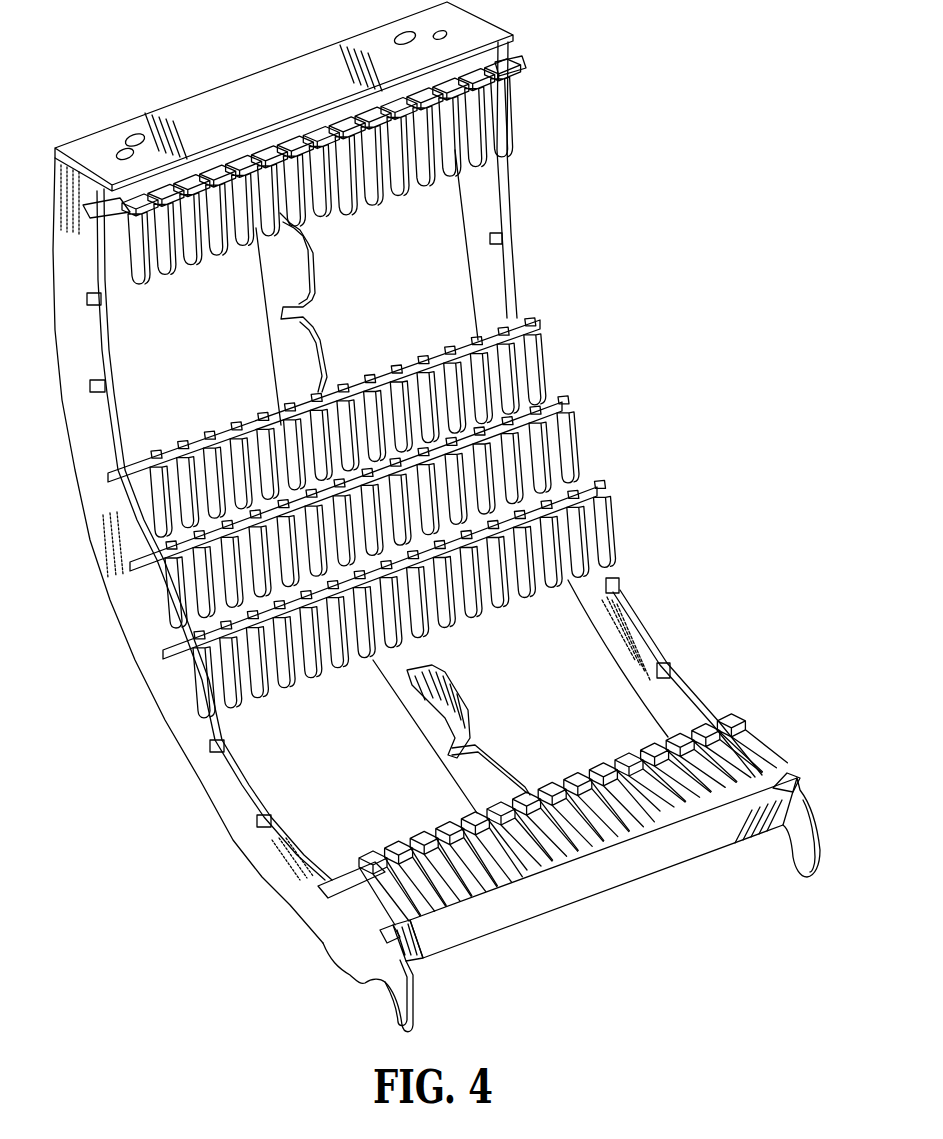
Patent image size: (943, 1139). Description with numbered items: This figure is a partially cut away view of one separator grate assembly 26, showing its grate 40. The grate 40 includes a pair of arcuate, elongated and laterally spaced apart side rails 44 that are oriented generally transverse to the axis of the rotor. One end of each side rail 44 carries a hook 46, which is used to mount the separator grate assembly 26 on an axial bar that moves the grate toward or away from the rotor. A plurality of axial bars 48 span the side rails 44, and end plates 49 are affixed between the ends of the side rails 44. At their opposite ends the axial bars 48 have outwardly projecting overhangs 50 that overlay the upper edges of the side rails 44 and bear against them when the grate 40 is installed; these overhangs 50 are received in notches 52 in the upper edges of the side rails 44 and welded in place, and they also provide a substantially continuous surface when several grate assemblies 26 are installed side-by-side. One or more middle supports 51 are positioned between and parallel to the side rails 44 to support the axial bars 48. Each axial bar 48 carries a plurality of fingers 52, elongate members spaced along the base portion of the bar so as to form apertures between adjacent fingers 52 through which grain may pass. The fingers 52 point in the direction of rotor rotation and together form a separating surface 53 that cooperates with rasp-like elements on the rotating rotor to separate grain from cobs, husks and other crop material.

The separator grate assembly 26 is at (173, 800).
The grate 40 is at (82, 593).
The side rails 44 is at (518, 280).
The hook 46 is at (783, 827).
The axial bars 48 is at (440, 352).
The end plates 49 is at (293, 60).
The overhangs 50 is at (112, 463).
The middle supports 51 is at (422, 742).
The fingers 52 is at (513, 235).
The separating surface 53 is at (520, 482).